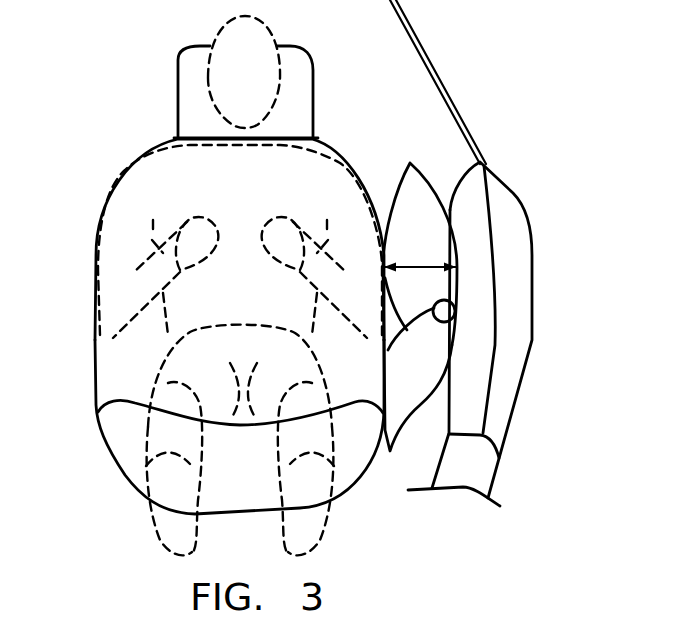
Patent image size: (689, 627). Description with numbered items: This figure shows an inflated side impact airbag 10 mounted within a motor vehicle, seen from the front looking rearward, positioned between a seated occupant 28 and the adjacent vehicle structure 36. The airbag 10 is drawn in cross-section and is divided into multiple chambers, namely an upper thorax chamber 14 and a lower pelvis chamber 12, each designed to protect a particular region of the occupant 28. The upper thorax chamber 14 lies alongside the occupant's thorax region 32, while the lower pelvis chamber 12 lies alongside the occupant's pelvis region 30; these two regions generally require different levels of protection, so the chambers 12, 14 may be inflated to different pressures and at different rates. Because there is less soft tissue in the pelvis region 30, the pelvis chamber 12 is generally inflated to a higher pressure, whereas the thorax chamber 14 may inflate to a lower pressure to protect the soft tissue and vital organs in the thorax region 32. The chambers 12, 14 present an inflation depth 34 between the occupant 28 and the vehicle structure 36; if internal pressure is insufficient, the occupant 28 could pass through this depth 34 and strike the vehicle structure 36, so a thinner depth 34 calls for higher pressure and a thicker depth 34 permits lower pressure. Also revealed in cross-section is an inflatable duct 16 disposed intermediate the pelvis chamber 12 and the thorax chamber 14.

The airbag 10 is at (437, 152).
The lower pelvis chamber 12 is at (431, 376).
The upper thorax chamber 14 is at (431, 229).
The inflatable duct 16 is at (455, 311).
The occupant 28 is at (174, 160).
The pelvis region 30 is at (95, 342).
The thorax region 32 is at (124, 154).
The depth 34 is at (411, 265).
The vehicle structure 36 is at (513, 194).